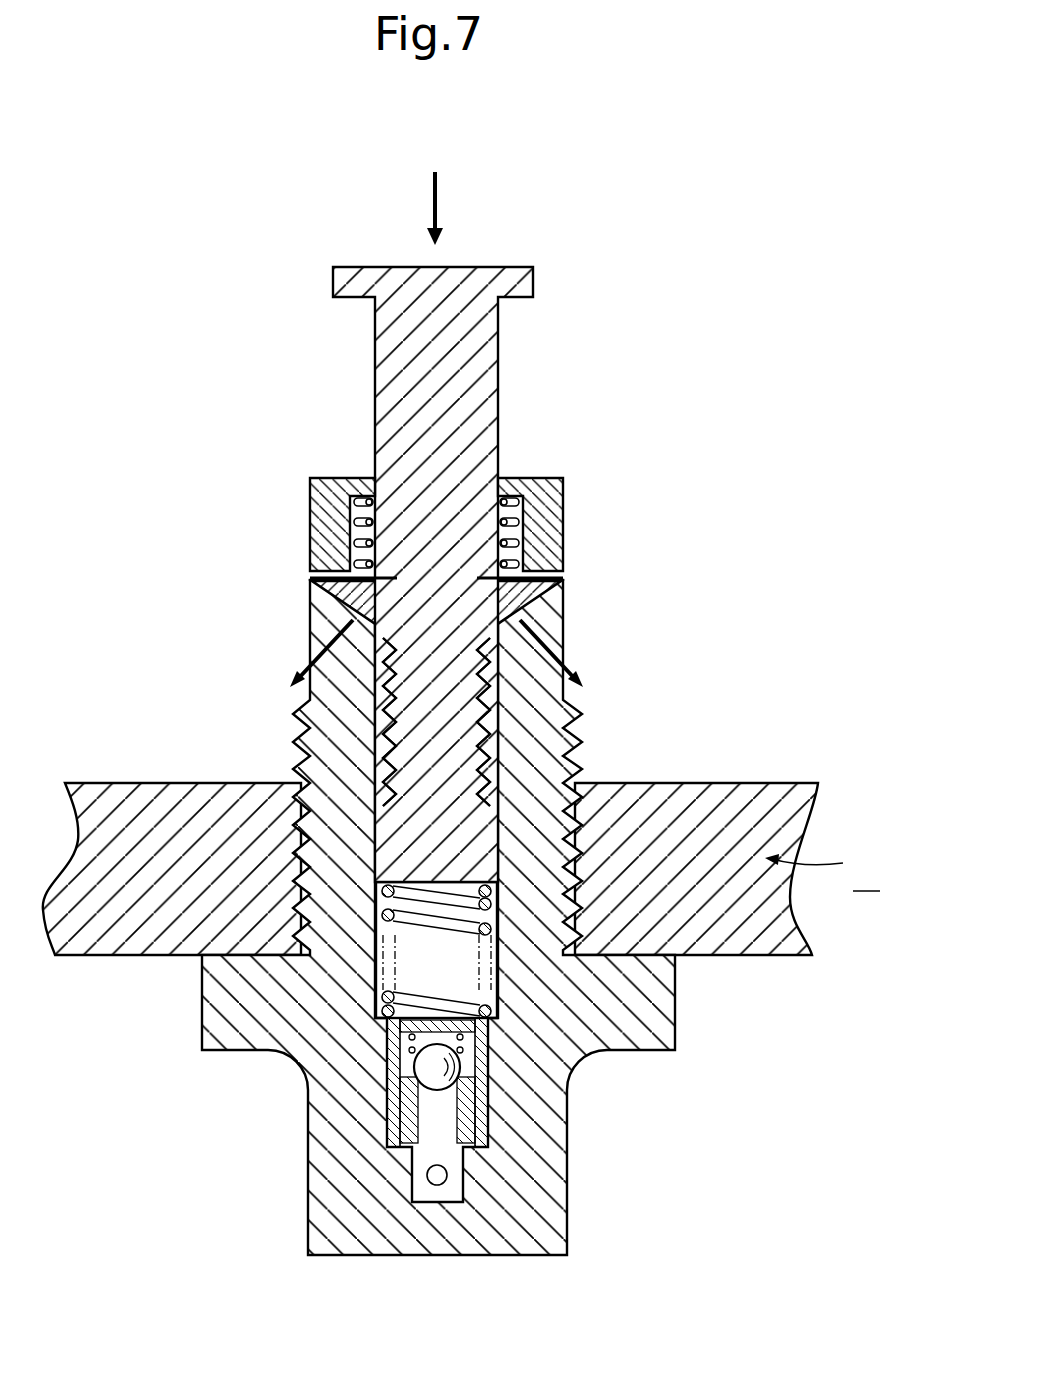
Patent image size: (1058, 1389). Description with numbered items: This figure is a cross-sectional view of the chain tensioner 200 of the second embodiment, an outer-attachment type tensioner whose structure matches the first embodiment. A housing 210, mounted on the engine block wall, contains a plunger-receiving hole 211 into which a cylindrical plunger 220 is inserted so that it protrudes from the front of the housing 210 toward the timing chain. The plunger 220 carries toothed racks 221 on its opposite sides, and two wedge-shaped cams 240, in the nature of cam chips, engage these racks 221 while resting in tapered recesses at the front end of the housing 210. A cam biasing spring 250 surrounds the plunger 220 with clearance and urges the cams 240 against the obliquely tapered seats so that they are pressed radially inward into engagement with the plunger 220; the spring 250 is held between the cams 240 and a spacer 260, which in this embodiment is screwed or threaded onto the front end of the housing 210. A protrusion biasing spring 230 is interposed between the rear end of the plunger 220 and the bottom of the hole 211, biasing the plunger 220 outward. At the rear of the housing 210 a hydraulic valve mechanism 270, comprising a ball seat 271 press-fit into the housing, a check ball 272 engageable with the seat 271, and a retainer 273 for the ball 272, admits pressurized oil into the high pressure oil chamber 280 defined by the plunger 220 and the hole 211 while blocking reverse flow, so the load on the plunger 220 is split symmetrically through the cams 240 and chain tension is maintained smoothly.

The chain tensioner 200 is at (268, 322).
The housing 210 is at (597, 1020).
The plunger-receiving hole 211 is at (487, 727).
The plunger 220 is at (484, 361).
The external thread 221 is at (390, 772).
The protrusion biasing spring 230 is at (390, 967).
The wedge-shaped cams 240 is at (384, 600).
The cam biasing spring 250 is at (517, 540).
The spacer 260 is at (552, 518).
The hydraulic valve mechanism 270 is at (167, 1128).
The ball seat 271 is at (383, 1138).
The check ball 272 is at (423, 1065).
The retainer 273 is at (392, 1033).
The high pressure oil chamber 280 is at (458, 958).